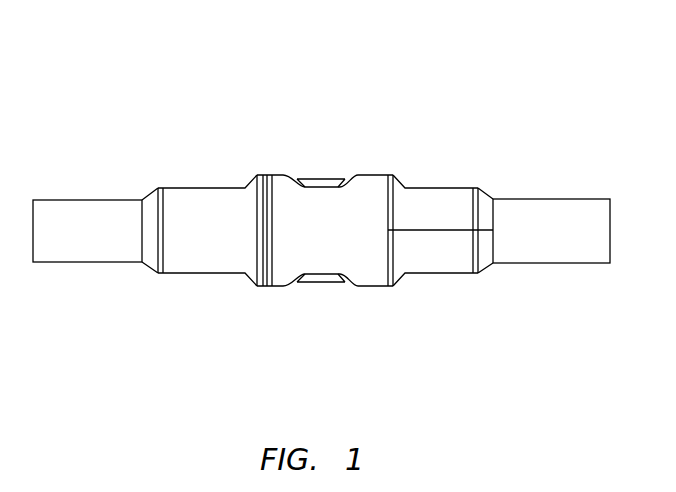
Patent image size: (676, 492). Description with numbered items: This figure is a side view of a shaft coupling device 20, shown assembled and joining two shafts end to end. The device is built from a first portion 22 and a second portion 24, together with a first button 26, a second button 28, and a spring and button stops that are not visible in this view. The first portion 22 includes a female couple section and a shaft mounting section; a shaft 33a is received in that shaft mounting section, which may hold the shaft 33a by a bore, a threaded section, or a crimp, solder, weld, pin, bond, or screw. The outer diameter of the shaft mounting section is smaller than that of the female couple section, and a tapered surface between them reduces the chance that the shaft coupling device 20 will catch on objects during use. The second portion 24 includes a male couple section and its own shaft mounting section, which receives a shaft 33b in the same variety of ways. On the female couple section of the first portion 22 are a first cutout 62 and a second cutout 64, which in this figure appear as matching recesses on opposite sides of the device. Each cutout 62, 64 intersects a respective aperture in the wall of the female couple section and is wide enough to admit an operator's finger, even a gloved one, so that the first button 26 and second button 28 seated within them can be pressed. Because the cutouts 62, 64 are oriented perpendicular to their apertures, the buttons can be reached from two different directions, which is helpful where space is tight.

The shaft coupling device 20 is at (321, 190).
The first portion 22 is at (422, 177).
The second portion 24 is at (233, 158).
The first button 26 is at (322, 177).
The second button 28 is at (323, 283).
The first cutout 62 is at (353, 180).
The second cutout 64 is at (352, 285).
The shaft 33a is at (550, 199).
The shaft 33b is at (87, 262).